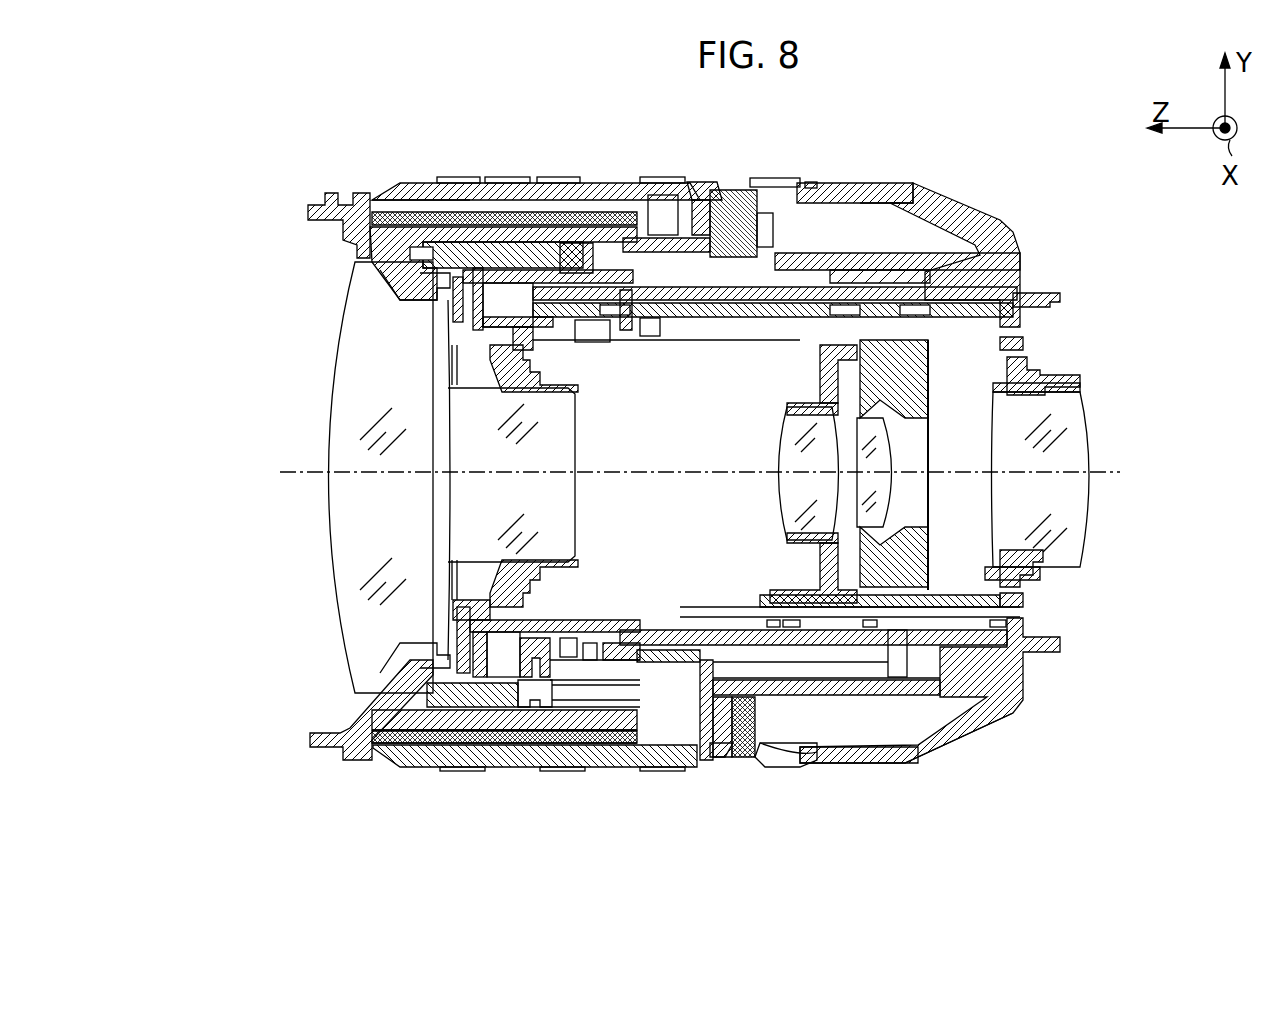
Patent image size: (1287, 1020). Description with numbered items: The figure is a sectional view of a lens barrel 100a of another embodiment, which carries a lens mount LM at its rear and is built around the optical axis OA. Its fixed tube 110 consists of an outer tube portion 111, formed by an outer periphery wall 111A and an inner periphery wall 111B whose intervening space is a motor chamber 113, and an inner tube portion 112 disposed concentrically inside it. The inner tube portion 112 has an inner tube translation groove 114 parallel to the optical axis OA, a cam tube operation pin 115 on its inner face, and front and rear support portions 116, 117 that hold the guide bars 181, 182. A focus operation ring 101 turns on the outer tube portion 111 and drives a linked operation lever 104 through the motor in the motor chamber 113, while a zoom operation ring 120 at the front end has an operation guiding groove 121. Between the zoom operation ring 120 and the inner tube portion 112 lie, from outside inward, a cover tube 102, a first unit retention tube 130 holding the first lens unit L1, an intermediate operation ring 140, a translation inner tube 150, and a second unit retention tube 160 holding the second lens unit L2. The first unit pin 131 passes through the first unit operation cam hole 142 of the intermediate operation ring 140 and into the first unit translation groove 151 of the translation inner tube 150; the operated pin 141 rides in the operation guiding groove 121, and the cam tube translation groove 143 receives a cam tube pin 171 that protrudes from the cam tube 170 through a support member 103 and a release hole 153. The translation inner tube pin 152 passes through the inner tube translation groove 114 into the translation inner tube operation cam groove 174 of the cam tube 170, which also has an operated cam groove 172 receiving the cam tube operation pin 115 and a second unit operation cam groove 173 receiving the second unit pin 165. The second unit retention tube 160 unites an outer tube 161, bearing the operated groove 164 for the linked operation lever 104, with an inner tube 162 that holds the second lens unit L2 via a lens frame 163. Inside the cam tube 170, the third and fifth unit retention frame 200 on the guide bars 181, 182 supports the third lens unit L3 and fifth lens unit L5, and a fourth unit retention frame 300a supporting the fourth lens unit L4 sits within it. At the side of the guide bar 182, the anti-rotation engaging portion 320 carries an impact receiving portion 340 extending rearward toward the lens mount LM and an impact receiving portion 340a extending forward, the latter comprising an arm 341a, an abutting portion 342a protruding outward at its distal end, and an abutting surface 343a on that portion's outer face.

The lens barrel 100a is at (619, 306).
The focus operation ring 101 is at (768, 180).
The cover tube 102 is at (466, 200).
The support member 103 is at (552, 768).
The linked operation lever 104 is at (722, 212).
The fixed tube 110 is at (919, 201).
The outer tube portion 111 is at (919, 223).
The outer periphery wall 111A is at (880, 183).
The inner periphery wall 111B is at (975, 228).
The inner tube portion 112 is at (830, 200).
The motor chamber 113 is at (878, 165).
The inner tube translation groove 114 is at (908, 765).
The cam tube operation pin 115 is at (688, 302).
The support portion 116 is at (628, 345).
The support portion 117 is at (1022, 318).
The zoom operation ring 120 is at (488, 182).
The operation guiding groove 121 is at (516, 182).
The first unit retention tube 130 is at (403, 194).
The first unit pin 131 is at (640, 186).
The intermediate operation ring 140 is at (531, 143).
The operated pin 141 is at (662, 195).
The first unit operation cam hole 142 is at (598, 240).
The cam tube translation groove 143 is at (606, 728).
The translation inner tube 150 is at (355, 260).
The first unit translation groove 151 is at (562, 184).
The translation inner tube pin 152 is at (1000, 672).
The release hole 153 is at (656, 702).
The second unit retention tube 160 is at (343, 466).
The outer tube 161 is at (452, 305).
The inner tube 162 is at (462, 322).
The lens frame 163 is at (470, 340).
The operated groove 164 is at (446, 278).
The second unit pin 165 is at (592, 335).
The cam tube 170 is at (1010, 266).
The cam tube pin 171 is at (510, 768).
The operated cam groove 172 is at (662, 322).
The second unit operation cam groove 173 is at (628, 330).
The translation inner tube operation cam groove 174 is at (928, 748).
The guide bar 181 is at (742, 345).
The guide bar 182 is at (726, 612).
The third and fifth unit retention frame 200 is at (1040, 368).
The fourth unit retention frame 300a is at (940, 432).
The anti-rotation engaging portion 320 is at (1010, 618).
The impact receiving portion 340 is at (1002, 592).
The impact receiving portion 340a is at (766, 756).
The arm 341a is at (835, 662).
The abutting portion 342a is at (770, 645).
The abutting surface 343a is at (805, 645).
The first lens unit L1 is at (332, 509).
The second lens unit L2 is at (578, 500).
The third lens unit L3 is at (778, 502).
The fourth lens unit L4 is at (918, 497).
The fifth lens unit L5 is at (1078, 512).
The lens mount LM is at (1062, 300).
The optical axis OA is at (288, 480).